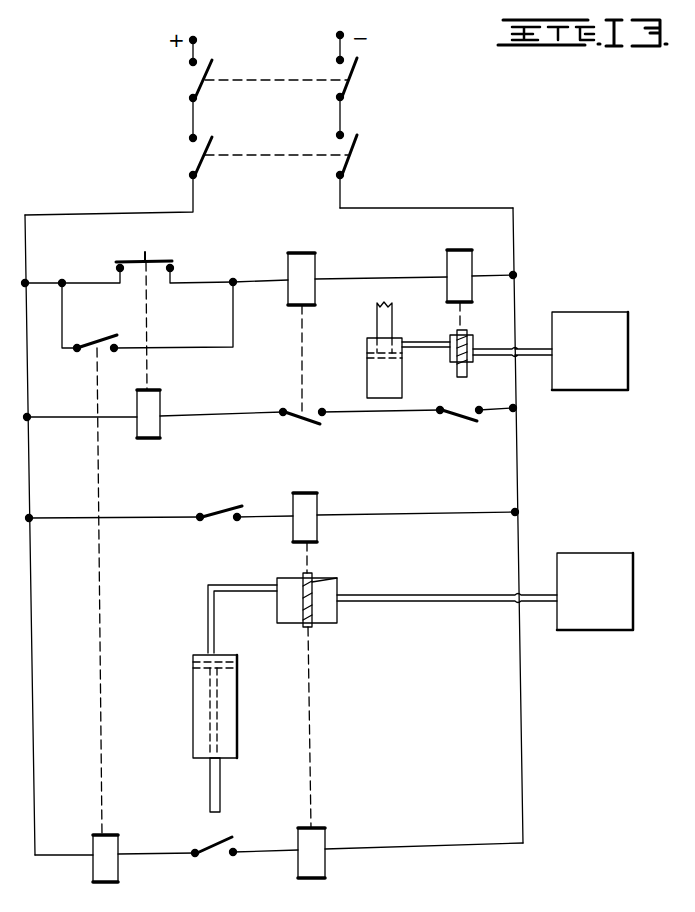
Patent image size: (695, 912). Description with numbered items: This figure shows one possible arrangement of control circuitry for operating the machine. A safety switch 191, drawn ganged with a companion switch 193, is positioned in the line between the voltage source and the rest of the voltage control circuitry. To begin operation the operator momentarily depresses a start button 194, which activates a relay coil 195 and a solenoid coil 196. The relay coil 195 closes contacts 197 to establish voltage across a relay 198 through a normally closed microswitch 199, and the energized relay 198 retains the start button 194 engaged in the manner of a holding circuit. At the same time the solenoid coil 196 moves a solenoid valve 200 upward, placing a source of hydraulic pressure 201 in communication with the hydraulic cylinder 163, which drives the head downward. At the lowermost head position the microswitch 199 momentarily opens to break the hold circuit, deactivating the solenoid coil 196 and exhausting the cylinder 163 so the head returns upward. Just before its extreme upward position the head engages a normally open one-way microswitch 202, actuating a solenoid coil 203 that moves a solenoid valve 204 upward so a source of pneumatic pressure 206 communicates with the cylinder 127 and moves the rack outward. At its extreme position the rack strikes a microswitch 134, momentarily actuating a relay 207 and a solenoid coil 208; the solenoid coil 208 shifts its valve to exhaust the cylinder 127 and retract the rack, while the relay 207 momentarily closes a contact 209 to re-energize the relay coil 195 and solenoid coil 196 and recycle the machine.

The ganged switch 193 is at (265, 80).
The safety switch 191 is at (258, 155).
The start button 194 is at (165, 261).
The relay coil 195 is at (314, 264).
The solenoid coil 196 is at (447, 263).
The hydraulic cylinder 163 is at (367, 345).
The solenoid valve 200 is at (467, 336).
The source of hydraulic pressure 201 is at (586, 320).
The contact 209 is at (92, 354).
The relay 198 is at (160, 424).
The contacts 197 is at (300, 422).
The normally closed microswitch 199 is at (456, 418).
The normally open one-way microswitch 202 is at (222, 511).
The solenoid coil 203 is at (318, 507).
The solenoid valve 204 is at (337, 583).
The source of pneumatic pressure 206 is at (588, 560).
The cylinder 127 is at (193, 717).
The relay 207 is at (93, 867).
The microswitch 134 is at (207, 860).
The solenoid coil 208 is at (332, 862).